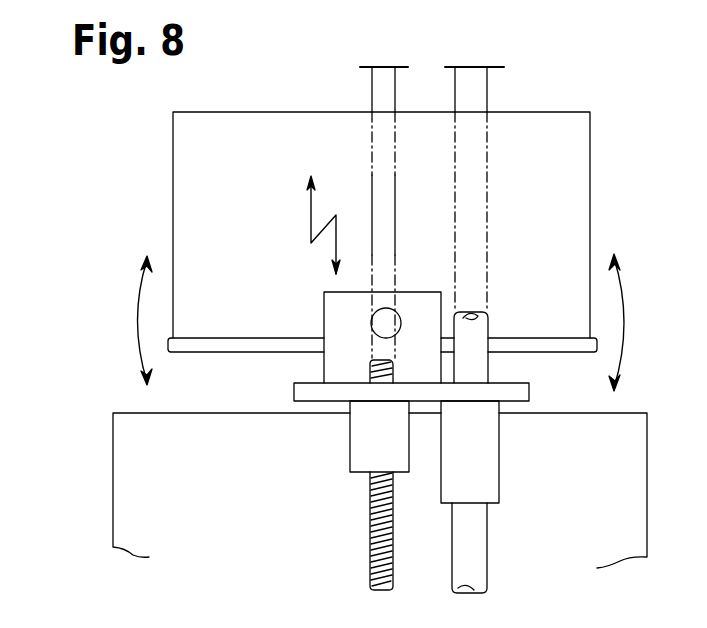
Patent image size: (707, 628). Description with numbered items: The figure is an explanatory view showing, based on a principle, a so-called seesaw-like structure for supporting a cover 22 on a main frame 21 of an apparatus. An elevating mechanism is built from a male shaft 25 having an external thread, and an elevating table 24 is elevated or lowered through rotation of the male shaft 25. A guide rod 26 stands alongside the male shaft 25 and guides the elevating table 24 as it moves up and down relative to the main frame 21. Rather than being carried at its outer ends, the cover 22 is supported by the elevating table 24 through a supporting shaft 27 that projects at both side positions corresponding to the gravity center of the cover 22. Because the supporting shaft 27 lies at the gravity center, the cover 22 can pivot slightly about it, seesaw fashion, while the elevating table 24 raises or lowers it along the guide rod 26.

The main frame 21 is at (125, 476).
The cover 22 is at (185, 178).
The elevating table 24 is at (529, 393).
The male shaft 25 is at (370, 517).
The guide rod 26 is at (474, 537).
The supporting shaft 27 is at (380, 323).